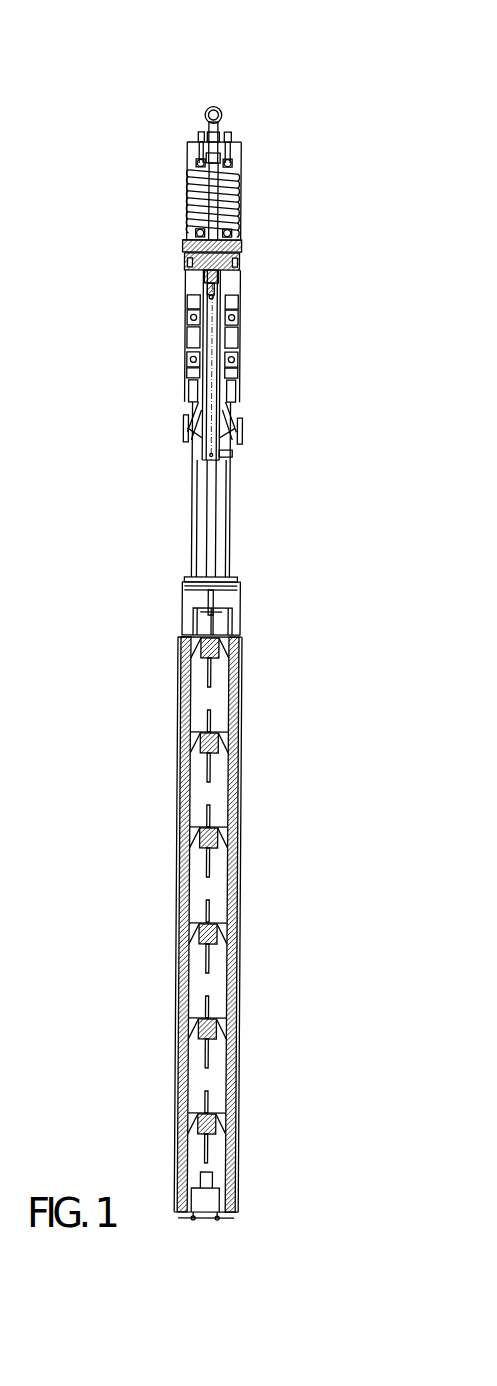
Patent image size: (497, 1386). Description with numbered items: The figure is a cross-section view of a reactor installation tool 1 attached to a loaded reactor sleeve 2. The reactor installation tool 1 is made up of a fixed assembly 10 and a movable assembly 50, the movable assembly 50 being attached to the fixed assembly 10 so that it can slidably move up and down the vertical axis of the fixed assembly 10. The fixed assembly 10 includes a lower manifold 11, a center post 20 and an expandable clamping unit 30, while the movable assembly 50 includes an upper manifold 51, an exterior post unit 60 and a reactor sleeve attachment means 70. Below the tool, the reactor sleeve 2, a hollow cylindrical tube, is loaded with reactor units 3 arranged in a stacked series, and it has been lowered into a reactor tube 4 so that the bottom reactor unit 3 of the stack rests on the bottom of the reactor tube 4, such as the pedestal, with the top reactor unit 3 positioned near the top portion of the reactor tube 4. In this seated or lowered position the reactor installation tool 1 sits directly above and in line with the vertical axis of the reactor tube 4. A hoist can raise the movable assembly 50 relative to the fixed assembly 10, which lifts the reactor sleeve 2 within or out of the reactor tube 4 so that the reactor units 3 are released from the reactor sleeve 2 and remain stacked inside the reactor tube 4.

The reactor installation tool 1 is at (281, 509).
The reactor sleeve 2 is at (242, 656).
The reactor unit 3 is at (239, 699).
The reactor tube 4 is at (178, 998).
The fixed assembly 10 is at (241, 247).
The lower manifold 11 is at (181, 246).
The center post 20 is at (210, 536).
The expandable clamping unit 30 is at (230, 305).
The movable assembly 50 is at (240, 151).
The upper manifold 51 is at (184, 151).
The exterior post unit 60 is at (230, 482).
The reactor sleeve attachment means 70 is at (232, 596).